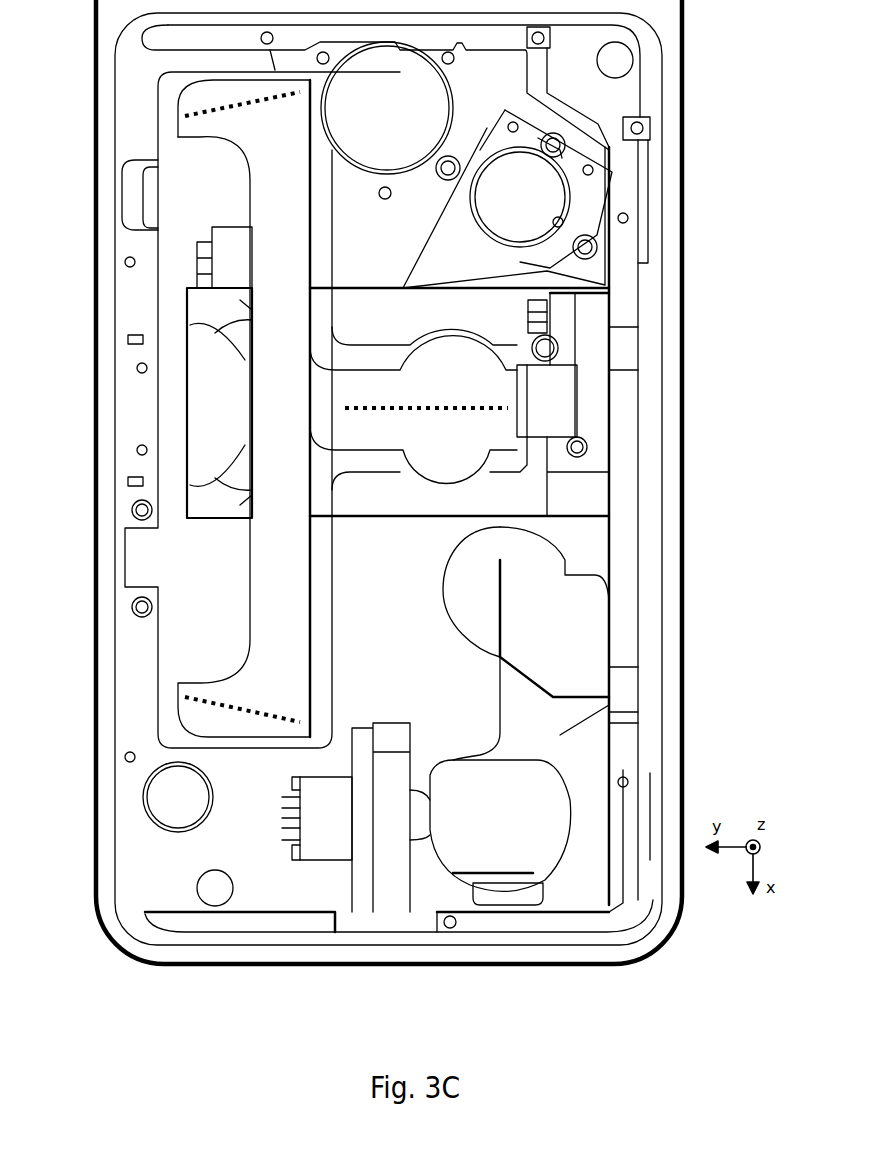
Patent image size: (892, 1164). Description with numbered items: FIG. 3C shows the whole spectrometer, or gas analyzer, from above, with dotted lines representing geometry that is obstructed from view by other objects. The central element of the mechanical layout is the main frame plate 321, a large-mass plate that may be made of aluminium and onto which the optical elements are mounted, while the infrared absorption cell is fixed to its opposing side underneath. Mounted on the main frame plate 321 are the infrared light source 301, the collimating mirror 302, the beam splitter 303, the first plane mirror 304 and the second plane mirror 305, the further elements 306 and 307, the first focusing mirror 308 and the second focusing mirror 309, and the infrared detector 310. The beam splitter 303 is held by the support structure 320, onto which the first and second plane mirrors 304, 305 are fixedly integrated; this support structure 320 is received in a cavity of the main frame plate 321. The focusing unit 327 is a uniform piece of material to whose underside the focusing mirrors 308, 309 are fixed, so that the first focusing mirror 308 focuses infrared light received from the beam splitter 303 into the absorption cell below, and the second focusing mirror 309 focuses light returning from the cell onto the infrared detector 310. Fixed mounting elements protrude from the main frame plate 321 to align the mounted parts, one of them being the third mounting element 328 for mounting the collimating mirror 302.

The infrared light source 301 is at (533, 332).
The collimating mirror 302 is at (504, 208).
The beam splitter 303 is at (470, 406).
The first plane mirror 304 is at (253, 105).
The second plane mirror 305 is at (253, 717).
The mounted element 306 is at (219, 372).
The mounted element 307 is at (221, 402).
The first focusing mirror 308 is at (526, 592).
The second focusing mirror 309 is at (500, 832).
The infrared detector 310 is at (356, 817).
The support structure 320 is at (367, 410).
The main frame plate 321 is at (252, 967).
The focusing unit 327 is at (531, 660).
The third mounting element 328 is at (541, 189).